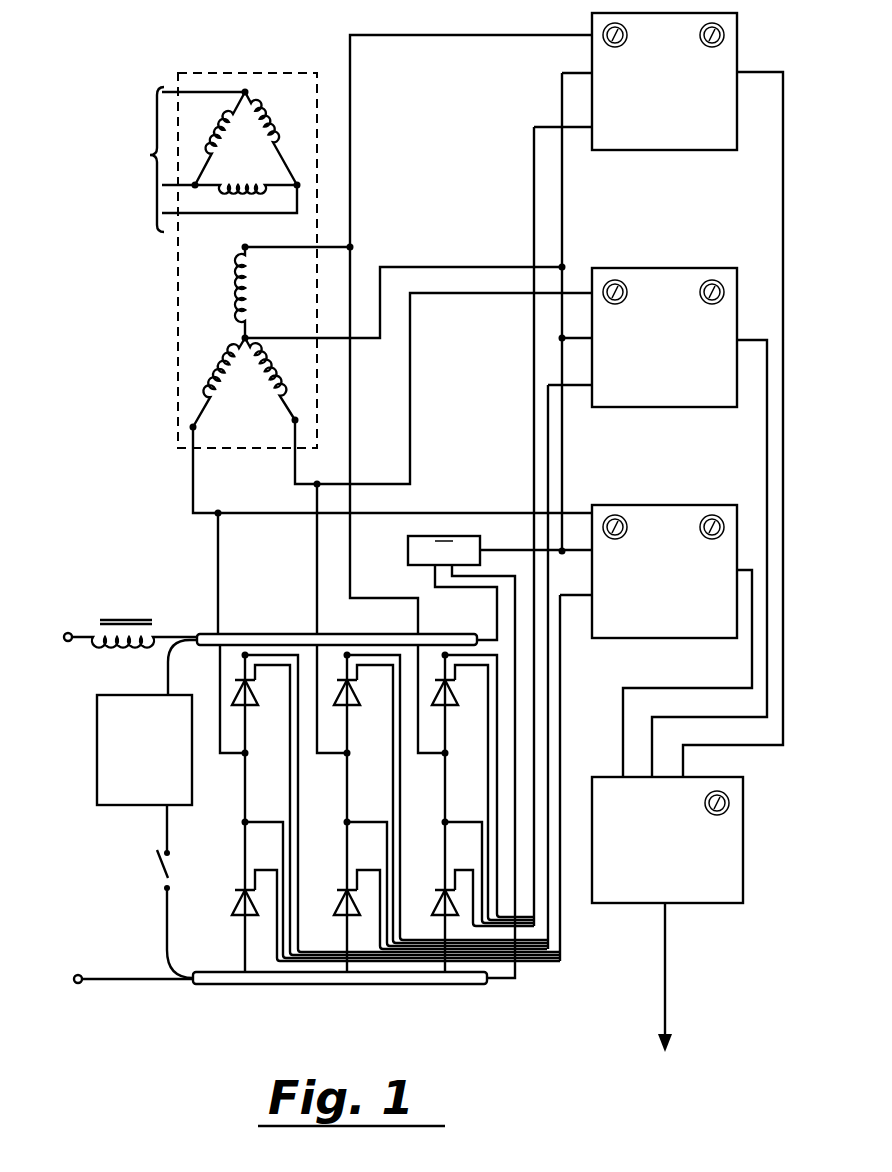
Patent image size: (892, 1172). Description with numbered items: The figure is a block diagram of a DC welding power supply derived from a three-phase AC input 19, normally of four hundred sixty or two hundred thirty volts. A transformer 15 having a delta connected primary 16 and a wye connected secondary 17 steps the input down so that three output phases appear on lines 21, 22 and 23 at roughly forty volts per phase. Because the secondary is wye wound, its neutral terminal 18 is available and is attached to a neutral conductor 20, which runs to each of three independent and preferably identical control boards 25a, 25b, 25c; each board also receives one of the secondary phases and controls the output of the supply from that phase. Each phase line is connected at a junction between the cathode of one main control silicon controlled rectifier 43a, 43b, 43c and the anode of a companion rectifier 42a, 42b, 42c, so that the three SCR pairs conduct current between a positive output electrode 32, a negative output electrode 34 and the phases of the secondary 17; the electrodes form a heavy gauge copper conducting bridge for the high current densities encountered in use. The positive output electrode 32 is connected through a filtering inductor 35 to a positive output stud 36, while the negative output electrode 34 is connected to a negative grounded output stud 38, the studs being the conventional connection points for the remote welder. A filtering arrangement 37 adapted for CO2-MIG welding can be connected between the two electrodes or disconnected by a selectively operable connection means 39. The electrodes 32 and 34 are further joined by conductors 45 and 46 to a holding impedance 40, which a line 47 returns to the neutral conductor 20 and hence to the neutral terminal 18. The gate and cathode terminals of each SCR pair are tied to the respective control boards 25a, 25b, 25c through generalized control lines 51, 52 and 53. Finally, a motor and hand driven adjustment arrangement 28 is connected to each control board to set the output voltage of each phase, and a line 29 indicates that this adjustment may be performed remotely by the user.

The transformer 15 is at (178, 393).
The delta connected primary 16 is at (285, 123).
The wye connected secondary 17 is at (210, 293).
The neutral terminal 18 is at (243, 338).
The three-phase AC input 19 is at (138, 209).
The neutral conductor 20 is at (455, 267).
The output phase line 21 is at (353, 247).
The output phase line 22 is at (490, 296).
The output phase line 23 is at (498, 513).
The control board 25a is at (638, 152).
The control board 25b is at (650, 268).
The control board 25c is at (655, 505).
The motor and hand driven adjustment arrangement 28 is at (630, 905).
The remote adjustment line 29 is at (666, 968).
The positive output electrode 32 is at (265, 634).
The negative output electrode 34 is at (297, 985).
The filtering inductor 35 is at (128, 618).
The positive output stud 36 is at (70, 632).
The filtering arrangement 37 is at (114, 806).
The negative grounded output stud 38 is at (81, 984).
The selectively operable connection means 39 is at (160, 868).
The holding impedance 40 is at (408, 549).
The main control silicon controlled rectifier 42a is at (458, 702).
The main control silicon controlled rectifier 42b is at (360, 702).
The main control silicon controlled rectifier 42c is at (258, 702).
The main control silicon controlled rectifier 43a is at (433, 902).
The main control silicon controlled rectifier 43b is at (335, 902).
The main control silicon controlled rectifier 43c is at (233, 902).
The conductor 45 is at (497, 607).
The conductor 46 is at (514, 983).
The line 47 is at (523, 550).
The control line 51 is at (534, 410).
The control line 52 is at (550, 470).
The control line 53 is at (562, 683).